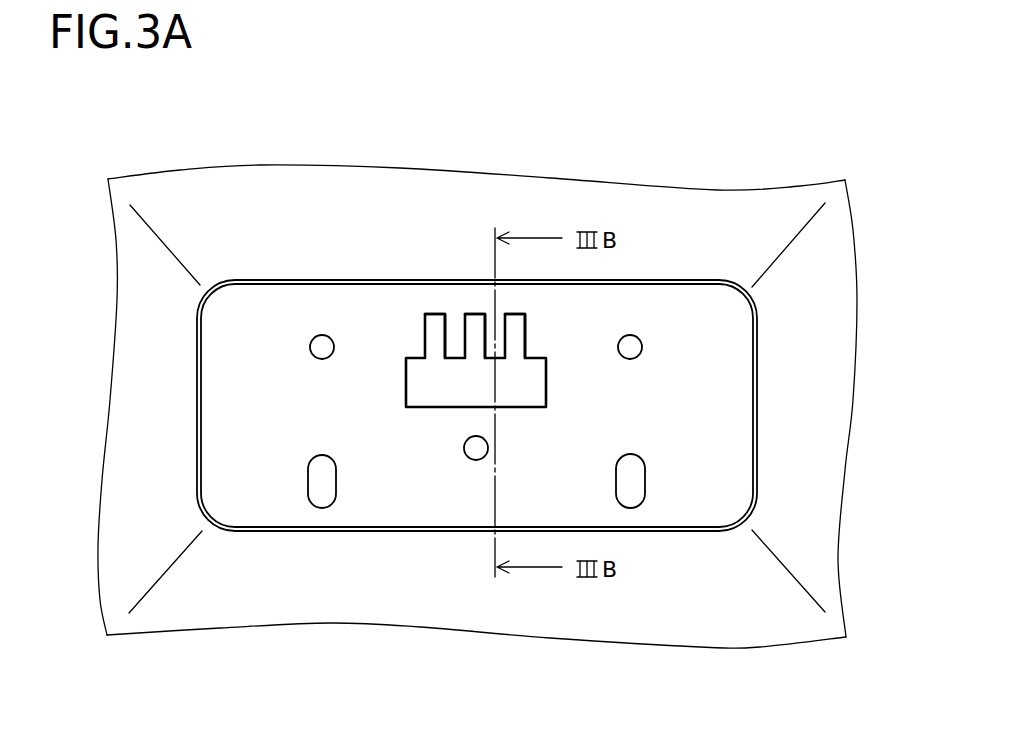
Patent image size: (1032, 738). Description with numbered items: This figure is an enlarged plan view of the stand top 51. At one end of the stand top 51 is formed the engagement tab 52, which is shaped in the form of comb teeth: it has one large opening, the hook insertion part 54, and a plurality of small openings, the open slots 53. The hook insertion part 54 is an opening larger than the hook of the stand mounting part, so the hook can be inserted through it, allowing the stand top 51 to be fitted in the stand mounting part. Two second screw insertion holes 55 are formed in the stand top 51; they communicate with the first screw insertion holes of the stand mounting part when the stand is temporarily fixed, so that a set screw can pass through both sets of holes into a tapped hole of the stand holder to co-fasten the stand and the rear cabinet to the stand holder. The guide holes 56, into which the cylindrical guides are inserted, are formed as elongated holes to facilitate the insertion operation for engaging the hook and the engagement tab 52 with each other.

The stand top 51 is at (825, 335).
The engagement tab 52 is at (497, 352).
The open slots 53 is at (518, 325).
The hook insertion part 54 is at (432, 395).
The second screw insertion holes 55 is at (630, 359).
The guide holes 56 is at (630, 508).